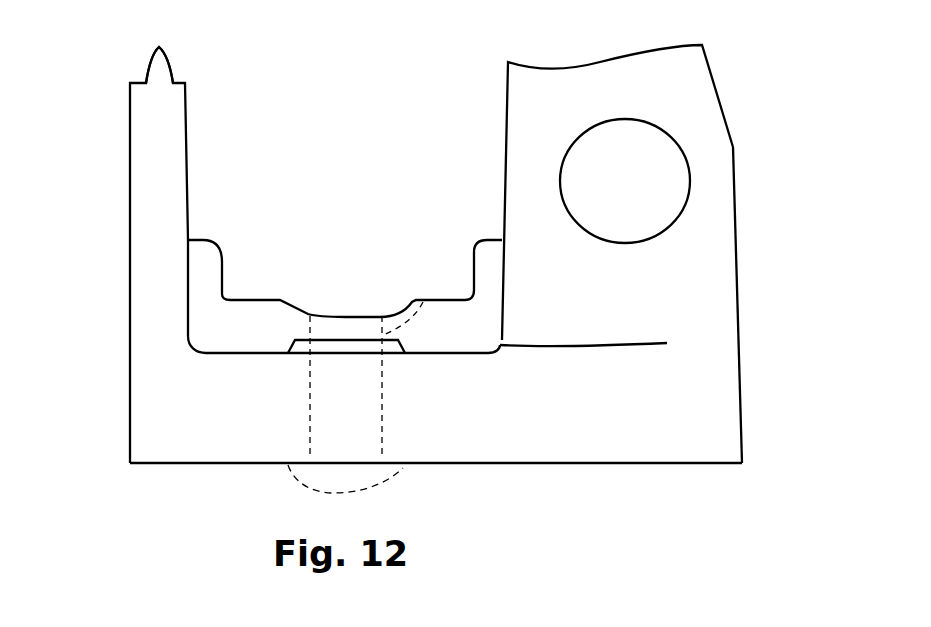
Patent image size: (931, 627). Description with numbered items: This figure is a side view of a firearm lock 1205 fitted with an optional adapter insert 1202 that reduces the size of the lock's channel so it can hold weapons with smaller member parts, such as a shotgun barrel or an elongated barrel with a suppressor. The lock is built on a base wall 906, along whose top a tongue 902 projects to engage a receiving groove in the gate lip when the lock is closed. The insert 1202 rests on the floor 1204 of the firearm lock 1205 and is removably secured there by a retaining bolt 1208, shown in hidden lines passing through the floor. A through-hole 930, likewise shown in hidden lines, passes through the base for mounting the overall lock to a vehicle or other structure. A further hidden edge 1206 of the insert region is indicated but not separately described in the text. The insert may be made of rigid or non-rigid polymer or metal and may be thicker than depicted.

The tongue 902 is at (143, 55).
The base wall 906 is at (143, 282).
The through-hole 930 is at (310, 423).
The adapter insert 1202 is at (237, 280).
The floor 1204 is at (667, 343).
The firearm lock 1205 is at (500, 140).
The hidden edge 1206 is at (423, 298).
The retaining bolt 1208 is at (393, 482).